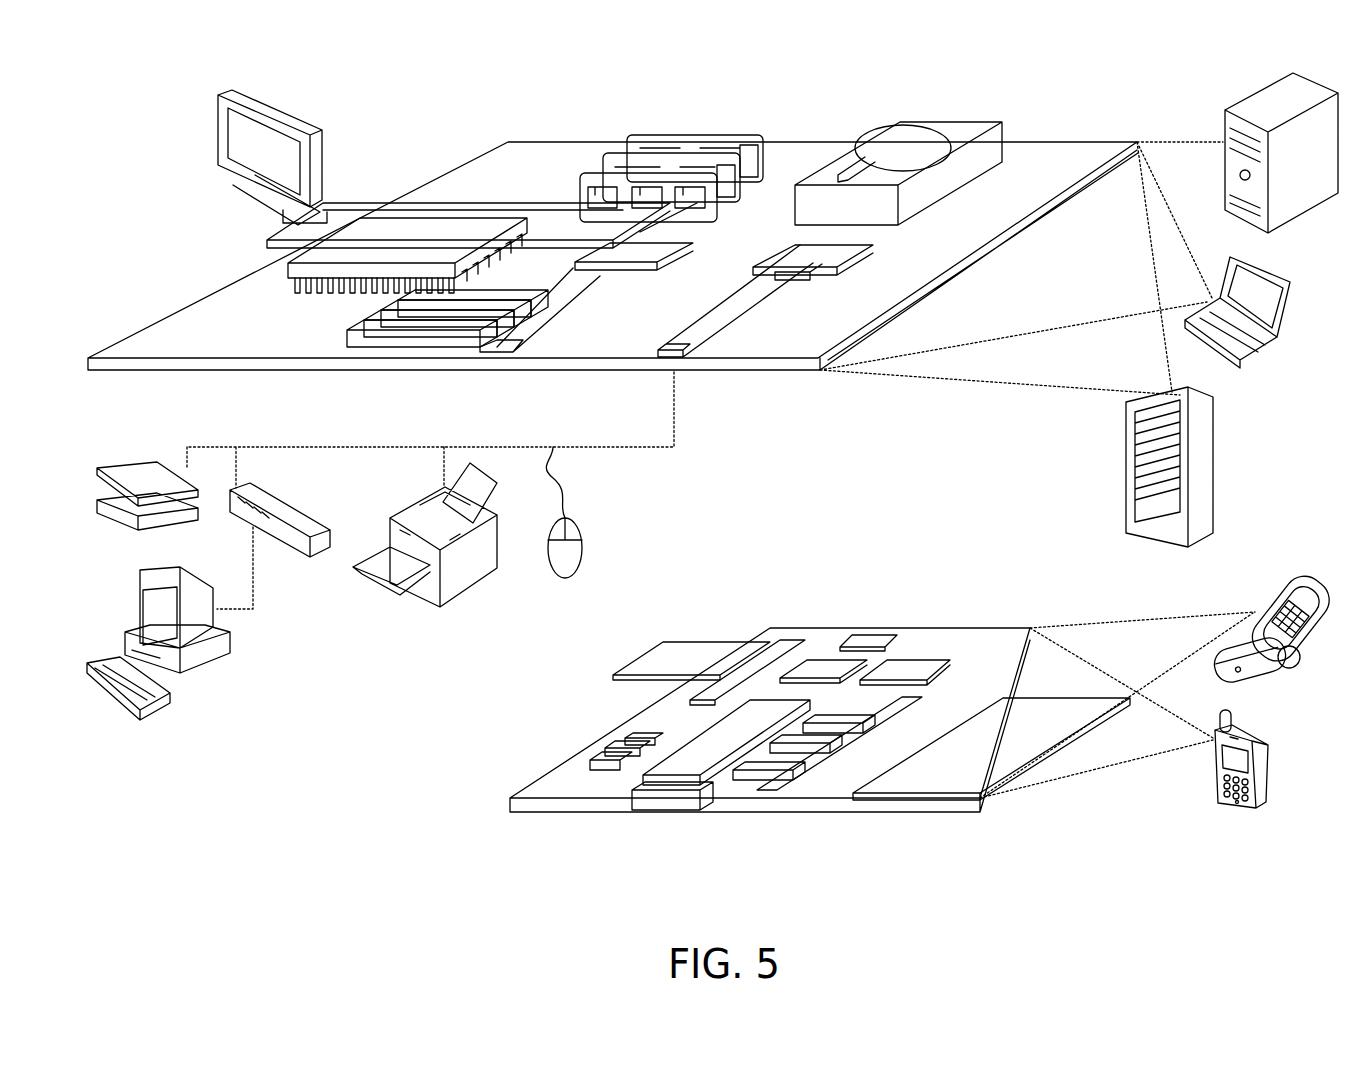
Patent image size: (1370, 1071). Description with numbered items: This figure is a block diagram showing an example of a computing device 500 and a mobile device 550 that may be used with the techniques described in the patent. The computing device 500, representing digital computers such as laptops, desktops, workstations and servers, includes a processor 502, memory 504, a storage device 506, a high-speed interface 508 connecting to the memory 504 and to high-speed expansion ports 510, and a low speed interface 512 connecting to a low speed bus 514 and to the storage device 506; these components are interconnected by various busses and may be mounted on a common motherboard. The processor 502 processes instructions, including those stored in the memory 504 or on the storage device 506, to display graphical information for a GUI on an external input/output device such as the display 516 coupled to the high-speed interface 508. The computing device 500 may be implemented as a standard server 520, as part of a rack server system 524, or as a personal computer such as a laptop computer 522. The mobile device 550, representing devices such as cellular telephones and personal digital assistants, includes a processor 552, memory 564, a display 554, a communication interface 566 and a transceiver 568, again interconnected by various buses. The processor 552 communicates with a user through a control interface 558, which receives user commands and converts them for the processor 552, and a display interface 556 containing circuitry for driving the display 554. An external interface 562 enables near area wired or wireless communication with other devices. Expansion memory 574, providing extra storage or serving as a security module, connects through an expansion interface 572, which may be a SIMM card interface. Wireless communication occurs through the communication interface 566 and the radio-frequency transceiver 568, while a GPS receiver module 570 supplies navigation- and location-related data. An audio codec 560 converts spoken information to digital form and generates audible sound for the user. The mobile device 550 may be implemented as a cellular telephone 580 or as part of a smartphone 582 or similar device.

The computing device 500 is at (430, 104).
The processor 502 is at (288, 268).
The memory 504 is at (648, 136).
The storage device 506 is at (893, 125).
The high-speed interface 508 is at (527, 195).
The high-speed expansion ports 510 is at (355, 327).
The low speed interface 512 is at (793, 255).
The low speed bus 514 is at (693, 370).
The display 516 is at (228, 88).
The standard server 520 is at (1223, 123).
The laptop computer 522 is at (1293, 291).
The rack server system 524 is at (1127, 488).
The mobile device 550 is at (486, 815).
The processor 552 is at (700, 787).
The display 554 is at (952, 782).
The display interface 556 is at (770, 790).
The control interface 558 is at (800, 770).
The audio codec 560 is at (833, 727).
The external interface 562 is at (660, 807).
The memory 564 is at (613, 755).
The communication interface 566 is at (826, 668).
The transceiver 568 is at (910, 647).
The GPS receiver module 570 is at (873, 623).
The expansion interface 572 is at (760, 642).
The expansion memory 574 is at (667, 642).
The cellular telephone 580 is at (1252, 552).
The smartphone 582 is at (1212, 768).